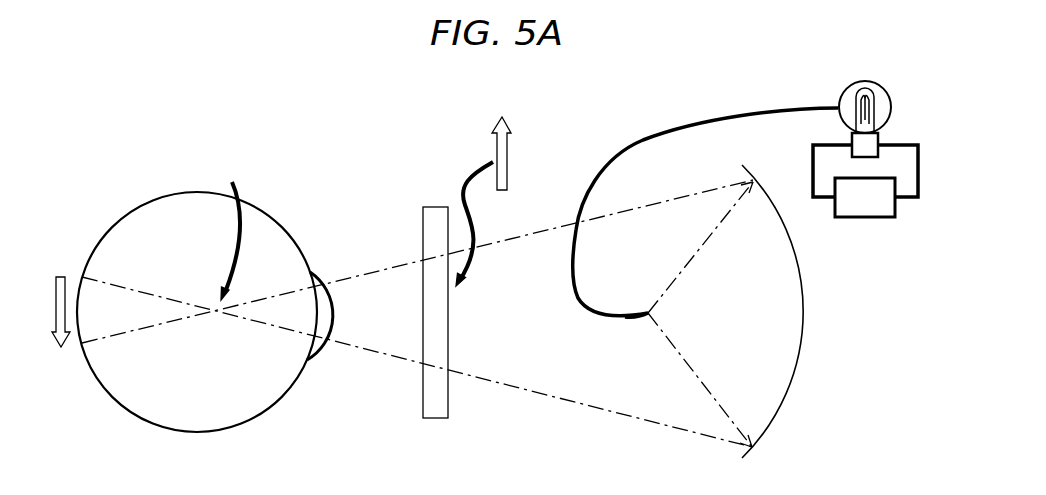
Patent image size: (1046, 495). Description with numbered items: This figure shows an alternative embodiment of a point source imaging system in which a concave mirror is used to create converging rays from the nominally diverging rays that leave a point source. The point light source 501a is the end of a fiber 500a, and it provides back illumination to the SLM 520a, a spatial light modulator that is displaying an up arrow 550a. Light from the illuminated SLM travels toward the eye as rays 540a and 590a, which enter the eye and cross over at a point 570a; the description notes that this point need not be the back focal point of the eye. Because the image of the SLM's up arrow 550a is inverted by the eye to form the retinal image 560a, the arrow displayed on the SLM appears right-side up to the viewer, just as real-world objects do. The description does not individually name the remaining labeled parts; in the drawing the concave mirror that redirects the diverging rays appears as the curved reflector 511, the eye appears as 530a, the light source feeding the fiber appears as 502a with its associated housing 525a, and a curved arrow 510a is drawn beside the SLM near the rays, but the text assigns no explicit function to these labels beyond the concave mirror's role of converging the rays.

The fiber 500a is at (717, 112).
The point light source 501a is at (640, 320).
The light source bulb 502a is at (888, 92).
The light beam path arrow 510a is at (555, 228).
The reflector 511 is at (803, 335).
The SLM 520a is at (447, 207).
The power supply 525a is at (865, 181).
The eye 530a is at (150, 424).
The ray 540a is at (355, 276).
The up arrow 550a is at (508, 152).
The retinal image 560a is at (58, 275).
The cross-over point 570a is at (224, 227).
The ray 590a is at (365, 349).